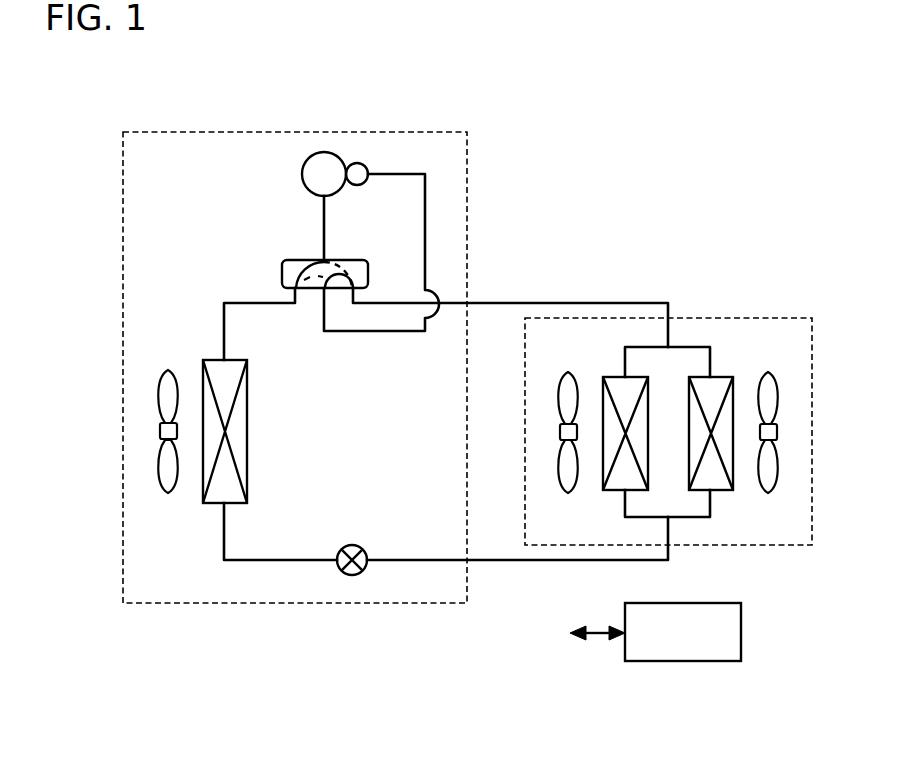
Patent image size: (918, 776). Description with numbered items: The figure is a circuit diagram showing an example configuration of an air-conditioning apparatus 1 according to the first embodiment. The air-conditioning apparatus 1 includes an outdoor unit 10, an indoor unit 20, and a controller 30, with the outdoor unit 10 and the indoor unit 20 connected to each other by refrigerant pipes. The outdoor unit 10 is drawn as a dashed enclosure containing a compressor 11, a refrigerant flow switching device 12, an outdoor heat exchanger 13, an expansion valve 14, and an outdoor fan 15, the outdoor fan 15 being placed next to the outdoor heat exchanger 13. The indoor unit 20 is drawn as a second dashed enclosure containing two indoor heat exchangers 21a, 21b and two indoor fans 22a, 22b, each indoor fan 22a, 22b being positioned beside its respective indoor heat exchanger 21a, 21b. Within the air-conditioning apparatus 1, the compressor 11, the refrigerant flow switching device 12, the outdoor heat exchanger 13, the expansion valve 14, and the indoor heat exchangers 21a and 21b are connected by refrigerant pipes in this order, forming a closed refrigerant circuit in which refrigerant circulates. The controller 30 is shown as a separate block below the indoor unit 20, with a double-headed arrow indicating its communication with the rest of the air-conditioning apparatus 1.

The air-conditioning apparatus 1 is at (697, 193).
The outdoor unit 10 is at (438, 130).
The compressor 11 is at (302, 178).
The refrigerant flow switching device 12 is at (355, 260).
The outdoor heat exchanger 13 is at (248, 387).
The expansion valve 14 is at (359, 548).
The outdoor fan 15 is at (162, 384).
The indoor unit 20 is at (780, 317).
The indoor heat exchanger 21a is at (727, 376).
The indoor heat exchanger 21b is at (607, 376).
The indoor fan 22a is at (768, 494).
The indoor fan 22b is at (568, 494).
The controller 30 is at (742, 615).